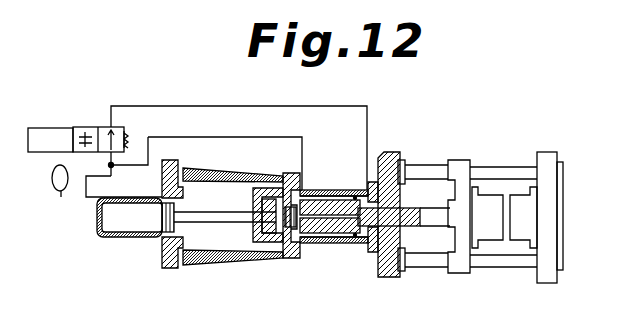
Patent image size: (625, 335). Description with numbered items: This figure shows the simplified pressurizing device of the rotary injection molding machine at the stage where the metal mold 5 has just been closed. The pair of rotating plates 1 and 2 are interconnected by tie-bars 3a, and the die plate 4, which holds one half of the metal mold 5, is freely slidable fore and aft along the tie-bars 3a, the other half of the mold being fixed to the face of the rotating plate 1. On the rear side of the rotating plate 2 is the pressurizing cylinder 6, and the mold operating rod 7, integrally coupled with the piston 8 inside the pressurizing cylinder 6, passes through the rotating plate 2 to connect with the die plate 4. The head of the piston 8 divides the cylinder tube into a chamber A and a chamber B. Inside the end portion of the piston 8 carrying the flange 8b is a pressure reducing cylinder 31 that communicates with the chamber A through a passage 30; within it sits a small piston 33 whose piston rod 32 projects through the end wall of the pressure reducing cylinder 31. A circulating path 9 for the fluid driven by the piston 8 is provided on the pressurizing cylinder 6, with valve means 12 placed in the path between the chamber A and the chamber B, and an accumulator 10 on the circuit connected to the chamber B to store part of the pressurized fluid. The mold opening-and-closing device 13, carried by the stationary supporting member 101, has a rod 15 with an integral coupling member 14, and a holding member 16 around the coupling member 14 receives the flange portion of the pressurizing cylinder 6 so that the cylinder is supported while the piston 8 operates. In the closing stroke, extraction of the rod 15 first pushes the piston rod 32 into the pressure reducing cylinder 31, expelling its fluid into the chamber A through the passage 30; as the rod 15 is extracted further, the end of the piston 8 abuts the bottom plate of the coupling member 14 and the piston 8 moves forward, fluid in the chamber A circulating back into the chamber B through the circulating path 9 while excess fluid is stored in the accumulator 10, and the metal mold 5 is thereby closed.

The rotating plate 1 is at (548, 152).
The rotating plate 2 is at (388, 152).
The tie-bars 3a is at (494, 166).
The die plate 4 is at (460, 162).
The metal mold 5 is at (517, 241).
The pressurizing cylinder 6 is at (325, 190).
The mold operating rod 7 is at (428, 212).
The piston 8 is at (332, 243).
The flange 8b is at (265, 243).
The circulating path 9 is at (85, 126).
The accumulator 10 is at (52, 181).
The valve means 12 is at (103, 126).
The mold opening-and-closing device 13 is at (122, 237).
The coupling member 14 is at (266, 194).
The rod 15 is at (211, 219).
The holding member 16 is at (232, 258).
The passage 30 is at (320, 243).
The pressure reducing cylinder 31 is at (284, 205).
The piston rod 32 is at (253, 203).
The small piston 33 is at (288, 250).
The stationary supporting member 101 is at (164, 258).
The chamber A is at (362, 243).
The chamber B is at (343, 190).